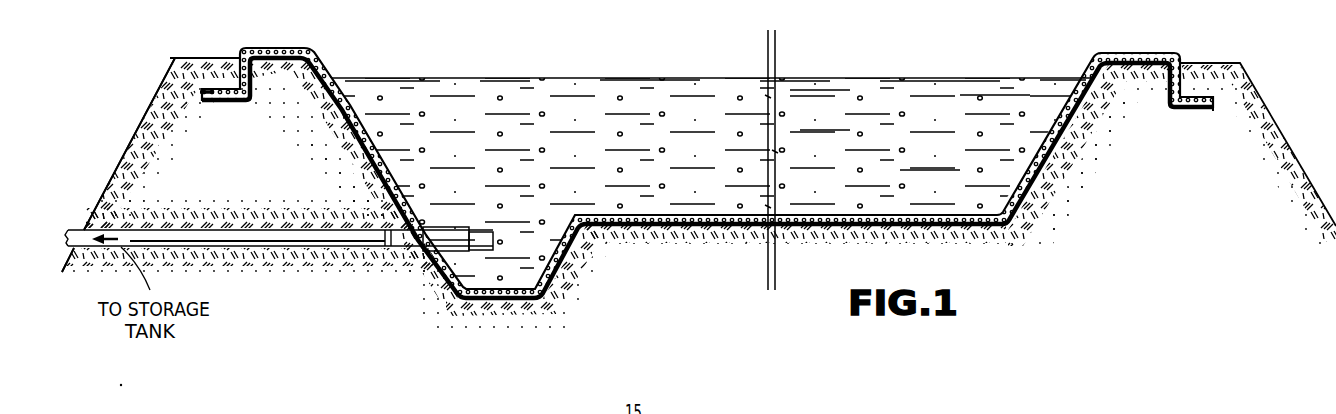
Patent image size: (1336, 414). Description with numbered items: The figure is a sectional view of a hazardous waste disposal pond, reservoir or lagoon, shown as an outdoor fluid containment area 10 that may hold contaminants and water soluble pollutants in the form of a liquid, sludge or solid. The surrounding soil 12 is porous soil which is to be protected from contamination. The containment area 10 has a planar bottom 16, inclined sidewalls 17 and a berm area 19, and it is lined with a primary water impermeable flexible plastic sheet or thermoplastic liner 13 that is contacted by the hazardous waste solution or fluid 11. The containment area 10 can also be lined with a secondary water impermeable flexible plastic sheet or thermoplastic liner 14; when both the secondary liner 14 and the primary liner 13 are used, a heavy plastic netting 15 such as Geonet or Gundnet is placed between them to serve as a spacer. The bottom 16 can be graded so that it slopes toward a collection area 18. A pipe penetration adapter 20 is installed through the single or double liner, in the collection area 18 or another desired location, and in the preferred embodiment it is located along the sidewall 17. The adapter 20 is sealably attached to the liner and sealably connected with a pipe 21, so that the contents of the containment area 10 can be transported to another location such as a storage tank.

The outdoor fluid containment area 10 is at (622, 75).
The hazardous waste fluid 11 is at (878, 97).
The soil 12 is at (216, 79).
The primary water impermeable flexible plastic liner 13 is at (333, 82).
The secondary water impermeable flexible plastic liner 14 is at (331, 139).
The heavy plastic netting 15 is at (205, 101).
The planar bottom 16 is at (693, 242).
The inclined sidewall 17 is at (343, 170).
The collection area 18 is at (506, 310).
The berm area 19 is at (127, 150).
The pipe penetration adapter 20 is at (459, 222).
The pipe 21 is at (327, 260).